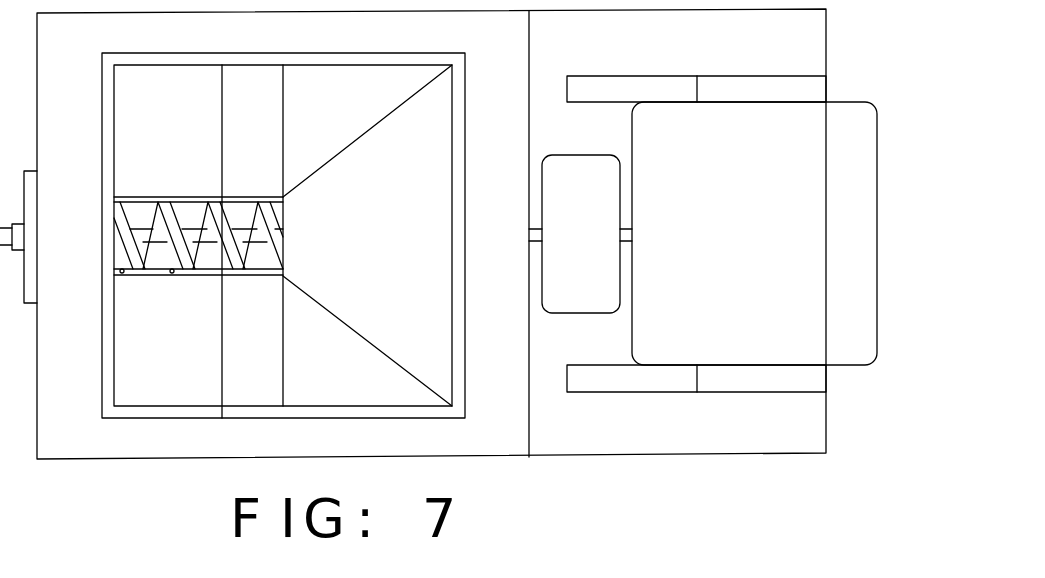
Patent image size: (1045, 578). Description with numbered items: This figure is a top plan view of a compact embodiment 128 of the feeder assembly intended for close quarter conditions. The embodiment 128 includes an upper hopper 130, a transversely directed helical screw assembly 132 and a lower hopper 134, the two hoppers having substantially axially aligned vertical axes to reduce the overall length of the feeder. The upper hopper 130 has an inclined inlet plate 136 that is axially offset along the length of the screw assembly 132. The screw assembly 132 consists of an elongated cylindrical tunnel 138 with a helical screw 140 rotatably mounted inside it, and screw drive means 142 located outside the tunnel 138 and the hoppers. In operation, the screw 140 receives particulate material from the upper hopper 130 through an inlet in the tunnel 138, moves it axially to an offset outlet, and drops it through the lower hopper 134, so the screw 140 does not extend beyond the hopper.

The feeder assembly embodiment 128 is at (533, 497).
The upper hopper 130 is at (303, 406).
The helical screw assembly 132 is at (188, 308).
The lower hopper 134 is at (219, 155).
The inclined inlet plate 136 is at (393, 229).
The cylindrical tunnel 138 is at (202, 197).
The helical screw 140 is at (262, 245).
The screw drive means 142 is at (630, 153).